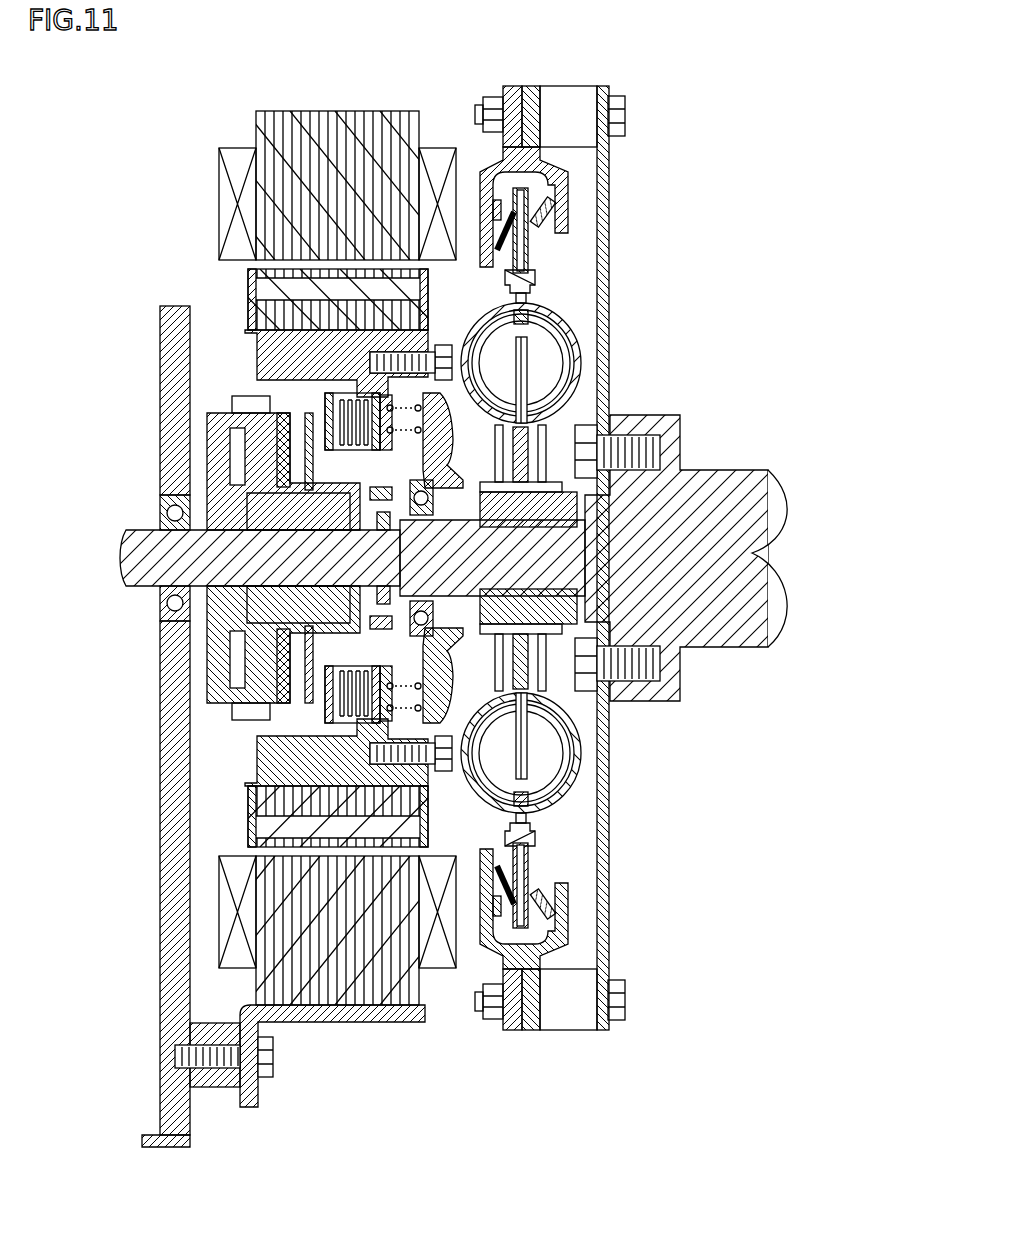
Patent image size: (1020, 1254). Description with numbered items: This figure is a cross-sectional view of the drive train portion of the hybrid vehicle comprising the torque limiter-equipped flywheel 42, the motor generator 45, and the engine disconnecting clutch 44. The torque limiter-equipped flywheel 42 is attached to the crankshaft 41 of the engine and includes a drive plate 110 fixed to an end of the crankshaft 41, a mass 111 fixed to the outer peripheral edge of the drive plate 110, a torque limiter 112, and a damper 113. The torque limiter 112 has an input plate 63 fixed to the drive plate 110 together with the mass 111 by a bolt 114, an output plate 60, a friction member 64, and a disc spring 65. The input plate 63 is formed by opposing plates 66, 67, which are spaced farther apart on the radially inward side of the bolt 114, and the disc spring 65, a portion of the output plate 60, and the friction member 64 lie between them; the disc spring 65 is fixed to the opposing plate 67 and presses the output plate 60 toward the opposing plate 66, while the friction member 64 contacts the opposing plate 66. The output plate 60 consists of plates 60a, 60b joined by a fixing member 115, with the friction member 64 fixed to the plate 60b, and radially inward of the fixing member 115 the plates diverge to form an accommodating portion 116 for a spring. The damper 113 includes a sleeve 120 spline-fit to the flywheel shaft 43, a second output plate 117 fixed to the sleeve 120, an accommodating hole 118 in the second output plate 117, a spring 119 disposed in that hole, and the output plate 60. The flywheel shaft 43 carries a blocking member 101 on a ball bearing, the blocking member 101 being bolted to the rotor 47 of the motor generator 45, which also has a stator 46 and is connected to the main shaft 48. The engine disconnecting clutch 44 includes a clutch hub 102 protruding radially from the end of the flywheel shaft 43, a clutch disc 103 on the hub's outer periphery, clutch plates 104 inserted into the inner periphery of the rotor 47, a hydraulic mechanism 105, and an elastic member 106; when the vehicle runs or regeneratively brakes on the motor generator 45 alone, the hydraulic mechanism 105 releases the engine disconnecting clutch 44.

The crankshaft 41 is at (750, 608).
The torque limiter-equipped flywheel 42 is at (652, 98).
The flywheel shaft 43 is at (575, 562).
The engine disconnecting clutch 44 is at (100, 355).
The motor generator 45 is at (312, 66).
The stator 46 is at (326, 118).
The rotor 47 is at (367, 312).
The main shaft 48 is at (155, 548).
The output plate 60 is at (676, 848).
The plate 60a is at (532, 897).
The plate 60b is at (522, 880).
The input plate 63 is at (562, 1080).
The friction member 64 is at (533, 835).
The disc spring 65 is at (550, 903).
The opposing plate 66 is at (517, 1030).
The opposing plate 67 is at (535, 1030).
The blocking member 101 is at (440, 698).
The clutch hub 102 is at (375, 490).
The clutch disc 103 is at (337, 446).
The clutch plates 104 is at (330, 433).
The hydraulic mechanism 105 is at (250, 408).
The elastic member 106 is at (380, 382).
The drive plate 110 is at (609, 304).
The mass 111 is at (565, 105).
The torque limiter 112 is at (578, 210).
The damper 113 is at (567, 300).
The bolt 114 is at (627, 990).
The fixing member 115 is at (548, 822).
The accommodating portion 116 is at (555, 790).
The second output plate 117 is at (530, 314).
The accommodating hole 118 is at (521, 353).
The spring 119 is at (565, 378).
The sleeve 120 is at (553, 510).